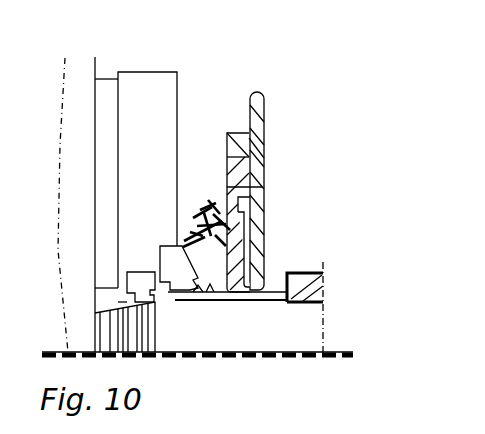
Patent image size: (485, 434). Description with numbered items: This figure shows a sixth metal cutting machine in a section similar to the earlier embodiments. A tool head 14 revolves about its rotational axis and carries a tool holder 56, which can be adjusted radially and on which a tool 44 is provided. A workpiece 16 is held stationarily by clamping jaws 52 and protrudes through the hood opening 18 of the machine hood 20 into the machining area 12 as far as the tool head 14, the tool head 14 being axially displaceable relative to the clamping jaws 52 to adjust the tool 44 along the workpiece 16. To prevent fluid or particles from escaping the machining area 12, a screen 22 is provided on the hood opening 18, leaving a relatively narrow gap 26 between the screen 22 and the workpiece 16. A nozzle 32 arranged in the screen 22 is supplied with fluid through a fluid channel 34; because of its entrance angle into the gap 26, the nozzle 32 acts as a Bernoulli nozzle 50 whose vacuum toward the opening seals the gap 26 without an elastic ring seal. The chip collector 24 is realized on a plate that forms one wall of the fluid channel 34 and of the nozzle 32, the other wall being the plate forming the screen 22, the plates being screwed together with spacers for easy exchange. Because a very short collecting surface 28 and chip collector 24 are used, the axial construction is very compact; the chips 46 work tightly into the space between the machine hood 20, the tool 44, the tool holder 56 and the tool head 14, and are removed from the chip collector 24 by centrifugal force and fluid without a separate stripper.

The tool head 14 is at (84, 88).
The tool holder 56 is at (132, 90).
The tool 44 is at (137, 272).
The chips 46 is at (199, 210).
The machining area 12 is at (230, 124).
The machine hood 20 is at (258, 110).
The screen 22 is at (265, 232).
The fluid channel 34 is at (246, 238).
The hood opening 18 is at (295, 247).
The clamping jaws 52 is at (327, 278).
The chip collector 24 is at (200, 302).
The collecting surface 28 is at (212, 303).
The Bernoulli nozzle 50 is at (235, 302).
The nozzle 32 is at (263, 302).
The gap 26 is at (280, 303).
The workpiece 16 is at (312, 318).